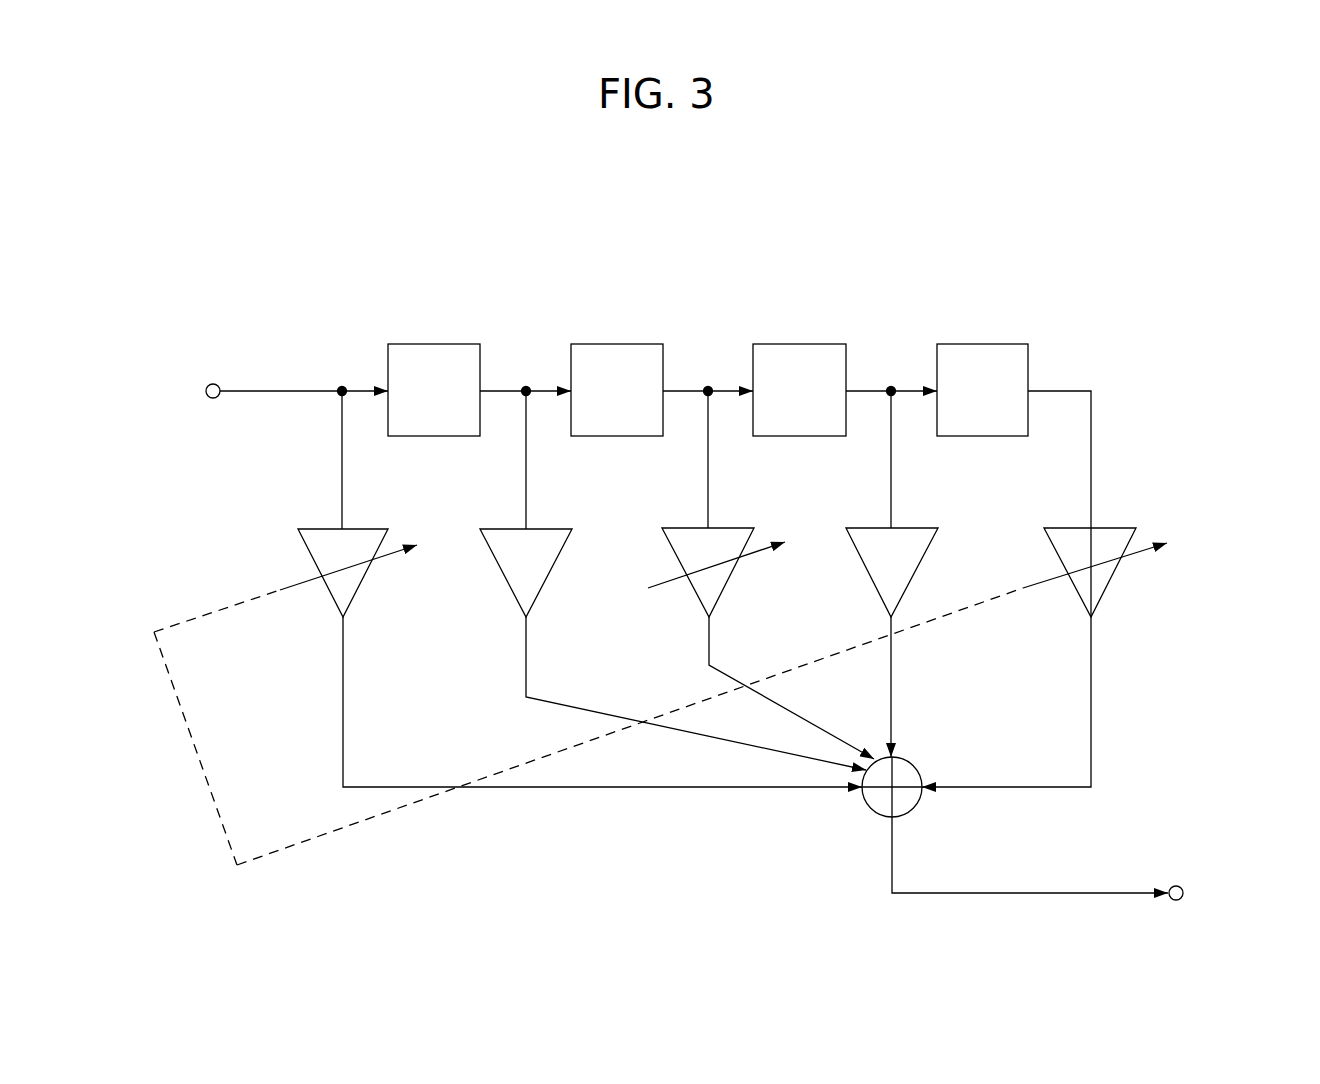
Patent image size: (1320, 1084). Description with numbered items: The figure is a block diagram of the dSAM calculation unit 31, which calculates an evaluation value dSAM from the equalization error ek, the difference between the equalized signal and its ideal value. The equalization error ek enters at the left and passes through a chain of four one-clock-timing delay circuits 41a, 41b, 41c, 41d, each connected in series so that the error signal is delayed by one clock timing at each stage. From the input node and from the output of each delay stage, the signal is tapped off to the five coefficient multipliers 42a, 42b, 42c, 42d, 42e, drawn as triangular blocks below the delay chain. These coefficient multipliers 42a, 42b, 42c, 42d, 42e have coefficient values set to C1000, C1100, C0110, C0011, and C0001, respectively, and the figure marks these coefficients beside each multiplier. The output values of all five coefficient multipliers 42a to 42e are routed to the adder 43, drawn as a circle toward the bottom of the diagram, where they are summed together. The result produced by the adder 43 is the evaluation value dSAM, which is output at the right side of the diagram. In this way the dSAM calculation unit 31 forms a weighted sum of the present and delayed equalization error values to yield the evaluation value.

The dSAM calculation unit 31 is at (677, 204).
The one-clock-timing delay circuit 41a is at (435, 344).
The one-clock-timing delay circuit 41b is at (619, 344).
The one-clock-timing delay circuit 41c is at (802, 344).
The one-clock-timing delay circuit 41d is at (987, 344).
The coefficient multiplier 42a is at (327, 593).
The coefficient multiplier 42b is at (511, 593).
The coefficient multiplier 42c is at (693, 592).
The coefficient multiplier 42d is at (905, 525).
The coefficient multiplier 42e is at (1105, 525).
The adder 43 is at (877, 815).